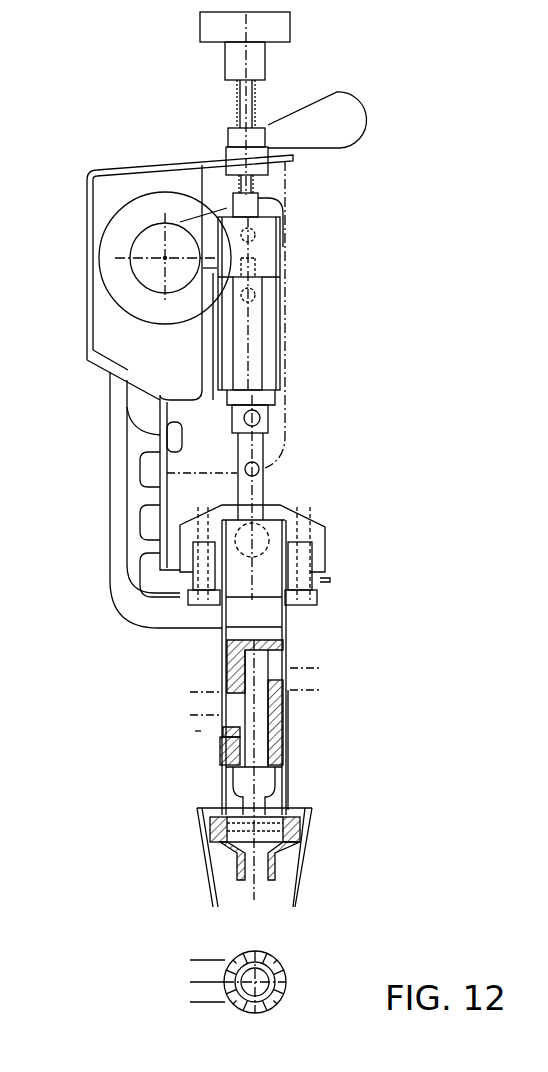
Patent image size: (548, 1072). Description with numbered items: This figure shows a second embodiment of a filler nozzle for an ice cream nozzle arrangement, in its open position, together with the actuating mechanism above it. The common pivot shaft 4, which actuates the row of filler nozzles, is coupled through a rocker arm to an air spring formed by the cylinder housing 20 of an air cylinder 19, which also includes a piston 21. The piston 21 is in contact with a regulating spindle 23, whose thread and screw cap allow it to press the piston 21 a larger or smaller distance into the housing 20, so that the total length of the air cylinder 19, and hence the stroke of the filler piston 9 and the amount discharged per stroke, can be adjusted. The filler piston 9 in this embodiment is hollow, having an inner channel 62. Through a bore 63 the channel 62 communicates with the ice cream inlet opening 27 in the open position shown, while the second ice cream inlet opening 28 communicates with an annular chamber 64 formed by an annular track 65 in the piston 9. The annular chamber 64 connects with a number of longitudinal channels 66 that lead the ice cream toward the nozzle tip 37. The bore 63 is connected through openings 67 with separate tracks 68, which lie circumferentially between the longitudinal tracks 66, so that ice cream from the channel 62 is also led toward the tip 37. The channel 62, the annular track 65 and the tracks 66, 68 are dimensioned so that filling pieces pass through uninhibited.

The pivot shaft 4 is at (132, 215).
The regulating spindle 23 is at (266, 98).
The piston 21 is at (262, 252).
The cylinder housing 20 is at (278, 303).
The air cylinder 19 is at (283, 339).
The filler piston 9 is at (265, 633).
The bore 63 is at (272, 660).
The ice cream inlet opening 27 is at (305, 668).
The annular track 65 is at (236, 698).
The inner channel 62 is at (258, 702).
The ice cream inlet opening 28 is at (197, 732).
The longitudinal channel 66 is at (280, 738).
The annular chamber 64 is at (233, 731).
The opening 67 is at (238, 752).
The nozzle tip 37 is at (262, 868).
The separate track 68 is at (276, 964).